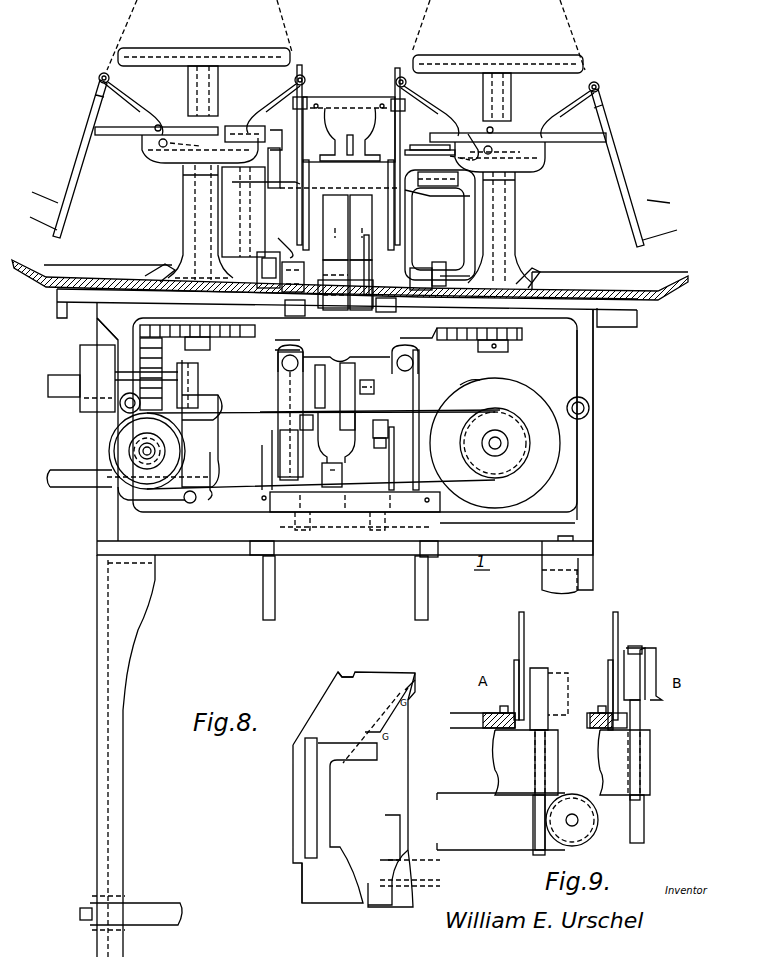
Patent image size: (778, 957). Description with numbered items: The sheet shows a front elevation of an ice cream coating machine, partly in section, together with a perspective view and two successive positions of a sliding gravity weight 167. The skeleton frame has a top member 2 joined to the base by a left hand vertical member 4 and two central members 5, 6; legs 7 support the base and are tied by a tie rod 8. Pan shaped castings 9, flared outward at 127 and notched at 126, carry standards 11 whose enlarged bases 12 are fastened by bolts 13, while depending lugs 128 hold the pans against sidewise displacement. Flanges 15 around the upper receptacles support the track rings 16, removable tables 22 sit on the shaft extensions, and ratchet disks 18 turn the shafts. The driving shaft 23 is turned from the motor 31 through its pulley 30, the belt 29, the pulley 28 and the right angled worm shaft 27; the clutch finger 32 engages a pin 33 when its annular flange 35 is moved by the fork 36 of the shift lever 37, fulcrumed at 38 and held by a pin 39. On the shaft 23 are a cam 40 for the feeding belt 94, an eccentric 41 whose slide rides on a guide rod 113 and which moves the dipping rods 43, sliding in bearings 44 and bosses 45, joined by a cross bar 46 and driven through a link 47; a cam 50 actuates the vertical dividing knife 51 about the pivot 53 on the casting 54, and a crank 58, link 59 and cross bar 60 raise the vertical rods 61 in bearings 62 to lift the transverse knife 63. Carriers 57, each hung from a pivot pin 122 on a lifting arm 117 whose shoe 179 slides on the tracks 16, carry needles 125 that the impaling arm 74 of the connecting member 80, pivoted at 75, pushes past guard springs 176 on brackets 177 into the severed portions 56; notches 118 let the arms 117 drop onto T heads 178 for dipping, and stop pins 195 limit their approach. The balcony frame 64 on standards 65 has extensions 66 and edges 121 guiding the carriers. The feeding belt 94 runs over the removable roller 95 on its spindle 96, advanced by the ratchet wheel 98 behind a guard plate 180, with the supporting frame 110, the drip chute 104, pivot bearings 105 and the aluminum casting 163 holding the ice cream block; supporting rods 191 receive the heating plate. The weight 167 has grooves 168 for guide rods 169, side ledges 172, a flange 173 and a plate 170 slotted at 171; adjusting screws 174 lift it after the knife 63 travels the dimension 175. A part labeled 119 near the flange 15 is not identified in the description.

In FIG. 1, the top member 2 is at (593, 330).
In FIG. 1, the left hand vertical member 4 is at (116, 332).
In FIG. 1, the vertical member 5 is at (593, 454).
In FIG. 1, the vertical member 6 is at (262, 446).
In FIG. 1, the legs 7 is at (535, 580).
In FIG. 1, the tie rod 8 is at (156, 902).
In FIG. 1, the pan shaped castings 9 is at (608, 286).
In FIG. 1, the standards 11 is at (516, 224).
In FIG. 1, the enlarged base 12 is at (534, 268).
In FIG. 1, the bolts 13 is at (347, 299).
In FIG. 1, the flanges 15 is at (555, 148).
In FIG. 1, the track rings 16 is at (603, 142).
In FIG. 1, the ratchet disks 18 is at (522, 346).
In FIG. 1, the removable tables 22 is at (520, 58).
In FIG. 1, the driving shaft 23 is at (56, 392).
In FIG. 1, the right angled shaft 27 is at (147, 458).
In FIG. 1, the pulley 28 is at (124, 446).
In FIG. 1, the belt 29 is at (455, 412).
In FIG. 1, the motor pulley 30 is at (512, 432).
In FIG. 1, the motor 31 is at (540, 396).
In FIG. 1, the clutch finger 32 is at (180, 372).
In FIG. 1, the pin 33 is at (116, 376).
In FIG. 1, the annular flange 35 is at (200, 374).
In FIG. 1, the fork 36 is at (212, 418).
In FIG. 1, the shift lever 37 is at (200, 455).
In FIG. 1, the fulcrum 38 is at (190, 503).
In FIG. 1, the pin 39 is at (114, 468).
In FIG. 1, the cam 40 is at (260, 410).
In FIG. 1, the eccentric 41 is at (290, 414).
In FIG. 1, the vertically movable rods 43 is at (415, 600).
In FIG. 1, the bearings 44 is at (440, 546).
In FIG. 1, the bosses 45 is at (262, 260).
In FIG. 1, the cross bar 46 is at (290, 512).
In FIG. 1, the link 47 is at (336, 448).
In FIG. 1, the cam 50 is at (348, 362).
In FIG. 1, the vertical dividing knife 51 is at (361, 272).
In FIG. 1, the pivot 53 is at (436, 340).
In FIG. 1, the casting 54 is at (335, 285).
In FIG. 1, the ice cream portions 56 is at (347, 227).
In FIG. 9, the ice cream portions 56 is at (652, 756).
In FIG. 1, the transferring carriers 57 is at (290, 120).
In FIG. 1, the crank 58 is at (376, 390).
In FIG. 1, the link 59 is at (386, 444).
In FIG. 1, the cross bar 60 is at (344, 530).
In FIG. 1, the vertical rods 61 is at (394, 464).
In FIG. 9, the vertical rods 61 is at (644, 814).
In FIG. 1, the bearings 62 is at (388, 428).
In FIG. 9, the transverse cutting knife 63 is at (645, 710).
In FIG. 9, the balcony frame 64 is at (640, 724).
In FIG. 1, the standards 65 is at (462, 280).
In FIG. 1, the side wise extensions 66 is at (516, 180).
In FIG. 1, the impaling arm 74 is at (476, 224).
In FIG. 1, the pivot pin 75 is at (440, 262).
In FIG. 1, the vertical connecting member 80 is at (412, 222).
In FIG. 1, the feeding belt 94 is at (345, 294).
In FIG. 9, the feeding belt 94 is at (501, 821).
In FIG. 9, the front removable roller 95 is at (584, 834).
In FIG. 9, the spindle 96 is at (576, 818).
In FIG. 1, the ratchet wheel 98 is at (284, 272).
In FIG. 1, the drip casting 104 is at (275, 346).
In FIG. 1, the pivot bearings 105 is at (392, 308).
In FIG. 1, the feeding belt supporting frame 110 is at (295, 308).
In FIG. 1, the guide rods 113 is at (416, 360).
In FIG. 1, the lifting arm 117 is at (542, 112).
In FIG. 1, the notches 118 is at (468, 130).
In FIG. 1, the head 119 is at (546, 162).
In FIG. 1, the side edges 121 is at (460, 190).
In FIG. 1, the pivot pin 122 is at (596, 82).
In FIG. 1, the needles 125 is at (349, 216).
In FIG. 1, the notches 126 is at (202, 266).
In FIG. 1, the flared portion 127 is at (686, 282).
In FIG. 1, the depending lugs 128 is at (637, 312).
In FIG. 1, the aluminum casting 163 is at (340, 186).
In FIG. 1, the gravity weight 167 is at (348, 97).
In FIG. 8, the gravity weight 167 is at (320, 712).
In FIG. 8, the vertical grooves 168 is at (305, 790).
In FIG. 9, the vertical grooves 168 is at (609, 664).
In FIG. 1, the guide rods 169 is at (394, 72).
In FIG. 9, the guide rods 169 is at (618, 620).
In FIG. 8, the plate 170 is at (405, 745).
In FIG. 9, the plate 170 is at (656, 670).
In FIG. 1, the slot 171 is at (350, 134).
In FIG. 8, the slot 171 is at (430, 880).
In FIG. 8, the side ledges 172 is at (300, 866).
In FIG. 8, the forwardly projecting flange 173 is at (352, 762).
In FIG. 9, the forwardly projecting flange 173 is at (634, 640).
In FIG. 9, the adjusting screws 174 is at (644, 650).
In FIG. 9, the dimension 175 is at (563, 694).
In FIG. 1, the guard springs 176 is at (422, 146).
In FIG. 1, the brackets 177 is at (446, 156).
In FIG. 1, the T heads 178 is at (290, 124).
In FIG. 1, the shoe 179 is at (556, 124).
In FIG. 1, the guard plate 180 is at (270, 250).
In FIG. 1, the supporting rods 191 is at (590, 408).
In FIG. 1, the stop pins 195 is at (418, 190).